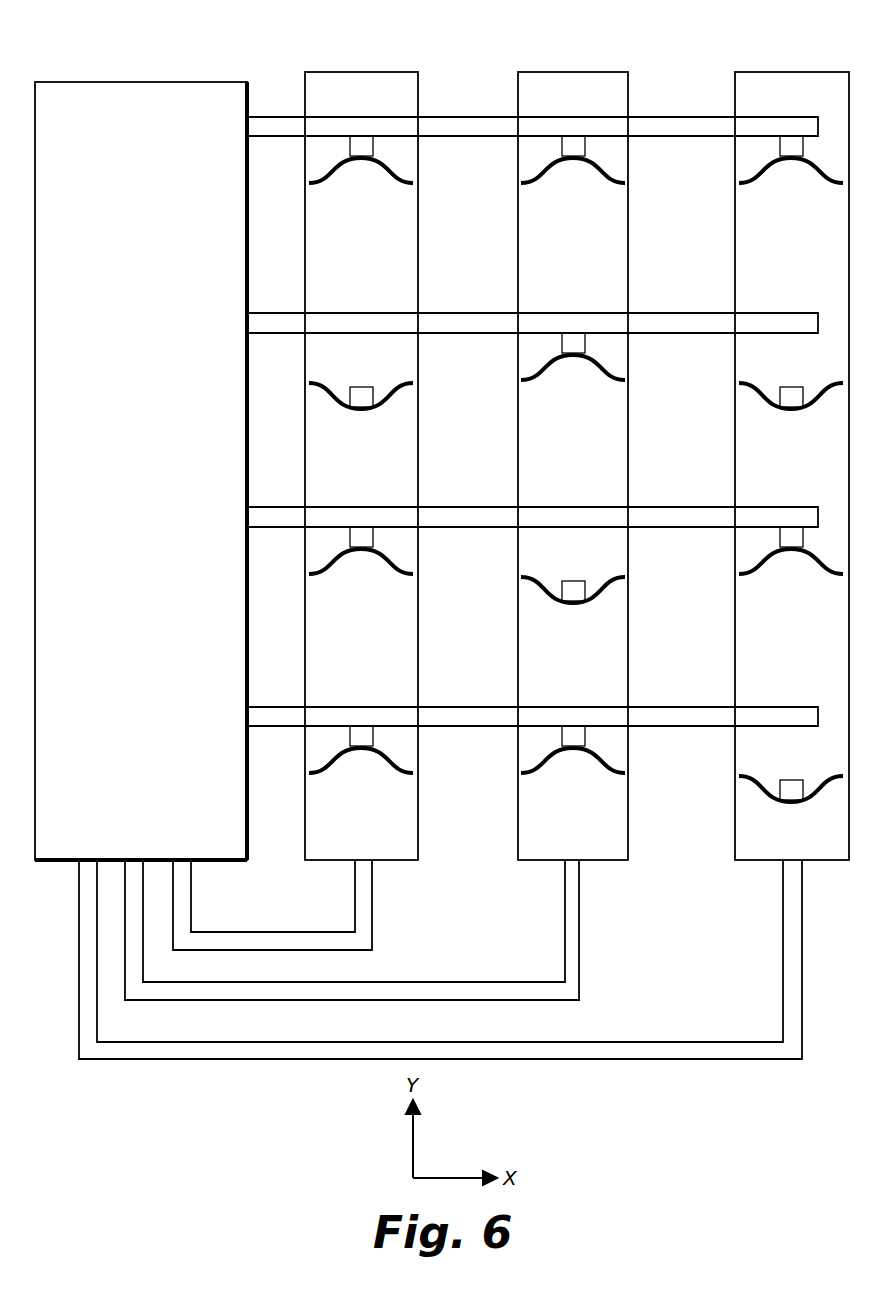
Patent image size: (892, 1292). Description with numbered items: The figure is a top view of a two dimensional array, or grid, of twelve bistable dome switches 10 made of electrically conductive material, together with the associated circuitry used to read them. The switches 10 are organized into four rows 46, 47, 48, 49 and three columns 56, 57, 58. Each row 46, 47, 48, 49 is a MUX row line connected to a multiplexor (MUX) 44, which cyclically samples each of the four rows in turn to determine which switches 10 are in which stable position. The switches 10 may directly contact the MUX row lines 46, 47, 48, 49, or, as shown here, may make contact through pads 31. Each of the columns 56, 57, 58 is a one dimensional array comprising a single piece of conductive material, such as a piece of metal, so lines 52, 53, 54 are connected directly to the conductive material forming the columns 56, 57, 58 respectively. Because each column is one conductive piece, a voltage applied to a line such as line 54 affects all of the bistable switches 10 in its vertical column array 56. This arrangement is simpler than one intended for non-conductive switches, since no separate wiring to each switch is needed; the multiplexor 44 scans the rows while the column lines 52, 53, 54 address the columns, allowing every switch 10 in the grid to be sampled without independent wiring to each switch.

The bistable switch 10 is at (382, 177).
The pad 31 is at (367, 147).
The multiplexor (MUX) 44 is at (112, 82).
The row 46 is at (290, 117).
The row 47 is at (276, 315).
The row 48 is at (271, 507).
The row 49 is at (274, 707).
The line 52 is at (240, 1060).
The line 53 is at (580, 1000).
The line 54 is at (373, 948).
The column 56 is at (360, 72).
The column 57 is at (610, 72).
The column 58 is at (818, 72).